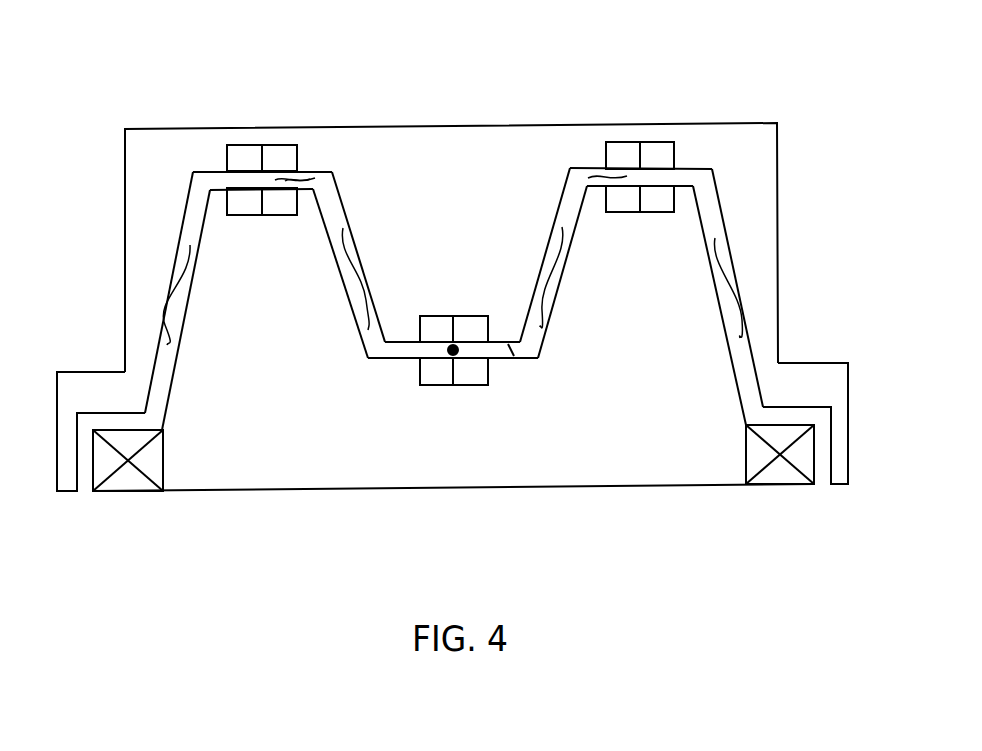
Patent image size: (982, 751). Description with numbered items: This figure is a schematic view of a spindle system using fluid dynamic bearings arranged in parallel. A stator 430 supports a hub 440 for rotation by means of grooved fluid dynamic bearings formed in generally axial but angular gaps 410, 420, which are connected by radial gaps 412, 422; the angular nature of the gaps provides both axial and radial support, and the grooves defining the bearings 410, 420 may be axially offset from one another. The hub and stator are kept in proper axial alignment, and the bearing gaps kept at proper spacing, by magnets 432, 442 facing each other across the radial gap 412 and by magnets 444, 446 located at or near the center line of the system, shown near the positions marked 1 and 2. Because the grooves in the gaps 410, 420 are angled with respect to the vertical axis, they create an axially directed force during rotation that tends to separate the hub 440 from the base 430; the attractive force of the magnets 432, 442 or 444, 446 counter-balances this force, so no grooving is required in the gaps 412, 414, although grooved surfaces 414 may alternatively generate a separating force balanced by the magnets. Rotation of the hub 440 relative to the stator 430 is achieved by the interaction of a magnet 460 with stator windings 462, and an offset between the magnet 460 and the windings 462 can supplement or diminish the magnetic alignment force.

The first position 1 is at (298, 178).
The second position 2 is at (517, 355).
The angular gap 410 is at (178, 343).
The radial gap 412 is at (207, 170).
The grooved surfaces 414 is at (492, 350).
The angular gap 420 is at (345, 287).
The radial gap 422 is at (432, 385).
The stator 430 is at (617, 438).
The magnet 432 is at (243, 217).
The hub 440 is at (737, 177).
The magnet 442 is at (243, 146).
The magnet 444 is at (438, 316).
The magnet 446 is at (453, 350).
The magnet 460 is at (848, 443).
The stator windings 462 is at (780, 485).